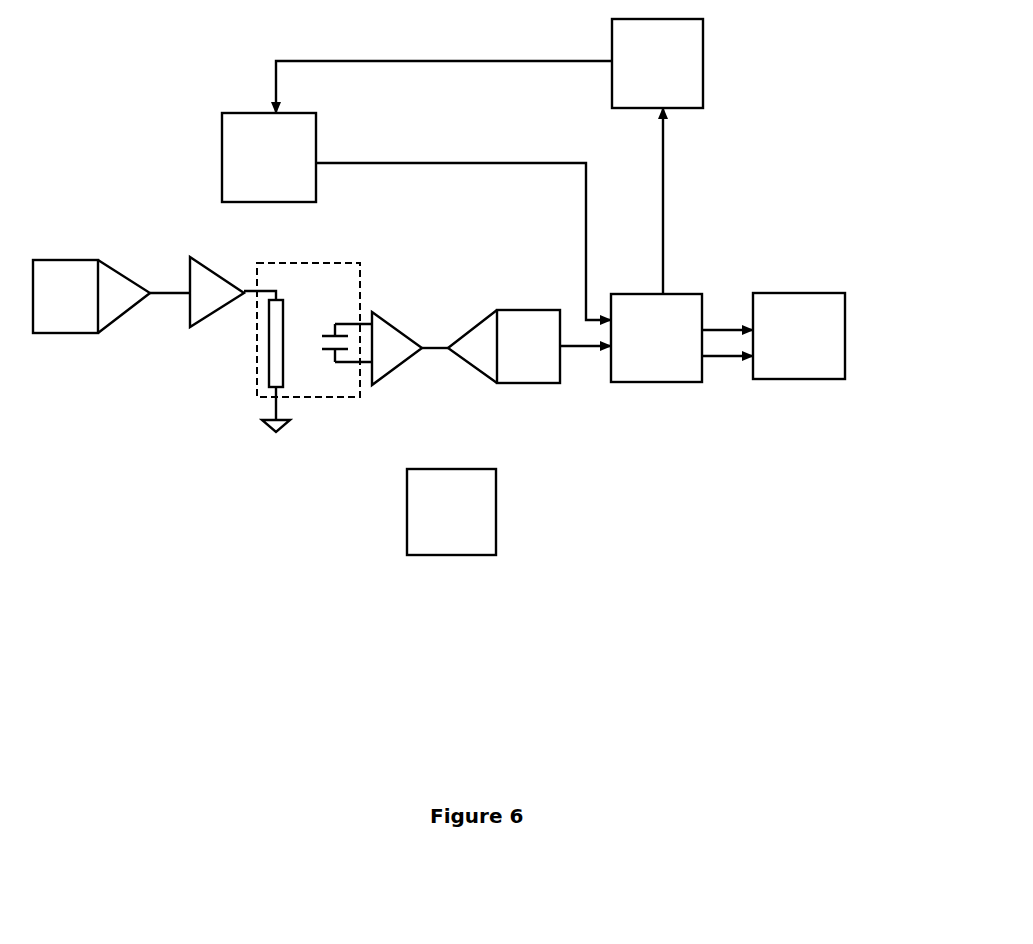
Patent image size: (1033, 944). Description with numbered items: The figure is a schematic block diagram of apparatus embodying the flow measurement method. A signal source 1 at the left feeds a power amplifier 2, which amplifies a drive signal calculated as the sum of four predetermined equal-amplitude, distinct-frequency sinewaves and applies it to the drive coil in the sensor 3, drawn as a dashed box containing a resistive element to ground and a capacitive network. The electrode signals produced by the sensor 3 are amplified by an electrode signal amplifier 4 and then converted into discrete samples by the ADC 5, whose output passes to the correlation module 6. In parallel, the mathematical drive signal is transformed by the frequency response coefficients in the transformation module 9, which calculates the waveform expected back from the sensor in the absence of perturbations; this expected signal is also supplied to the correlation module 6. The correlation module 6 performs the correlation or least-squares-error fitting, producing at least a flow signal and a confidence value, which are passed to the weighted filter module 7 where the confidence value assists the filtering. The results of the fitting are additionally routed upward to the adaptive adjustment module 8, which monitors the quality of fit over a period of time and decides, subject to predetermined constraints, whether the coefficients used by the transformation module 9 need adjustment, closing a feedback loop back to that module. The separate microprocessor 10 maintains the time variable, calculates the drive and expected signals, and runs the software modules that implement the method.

The signal source 1 is at (111, 296).
The power amplifier 2 is at (233, 292).
The sensor 3 is at (314, 347).
The electrode signal amplifier 4 is at (410, 348).
The ADC 5 is at (529, 346).
The correlation module 6 is at (682, 245).
The weighted filter module 7 is at (799, 336).
The adaptive adjustment module 8 is at (489, 66).
The transformation module 9 is at (416, 216).
The microprocessor 10 is at (451, 512).